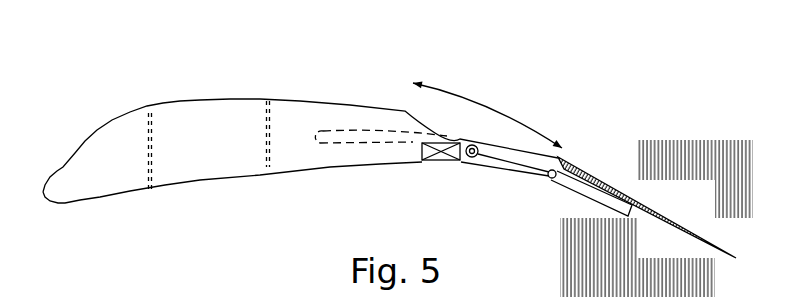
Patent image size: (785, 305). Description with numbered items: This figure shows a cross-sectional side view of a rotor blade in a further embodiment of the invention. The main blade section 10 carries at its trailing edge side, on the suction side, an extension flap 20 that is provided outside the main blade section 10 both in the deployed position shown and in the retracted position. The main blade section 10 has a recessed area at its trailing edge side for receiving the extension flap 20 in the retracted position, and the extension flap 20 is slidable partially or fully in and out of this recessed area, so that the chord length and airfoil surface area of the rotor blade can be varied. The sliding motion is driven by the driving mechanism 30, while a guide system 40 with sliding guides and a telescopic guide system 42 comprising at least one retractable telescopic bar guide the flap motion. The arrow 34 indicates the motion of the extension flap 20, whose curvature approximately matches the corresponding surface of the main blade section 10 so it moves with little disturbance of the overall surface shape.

The main blade section 10 is at (119, 110).
The extension flap 20 is at (647, 195).
The driving mechanism 30 is at (421, 162).
The flap pivoting movement 34 is at (497, 107).
The guide system 40 is at (340, 129).
The telescopic guide system 42 is at (550, 177).